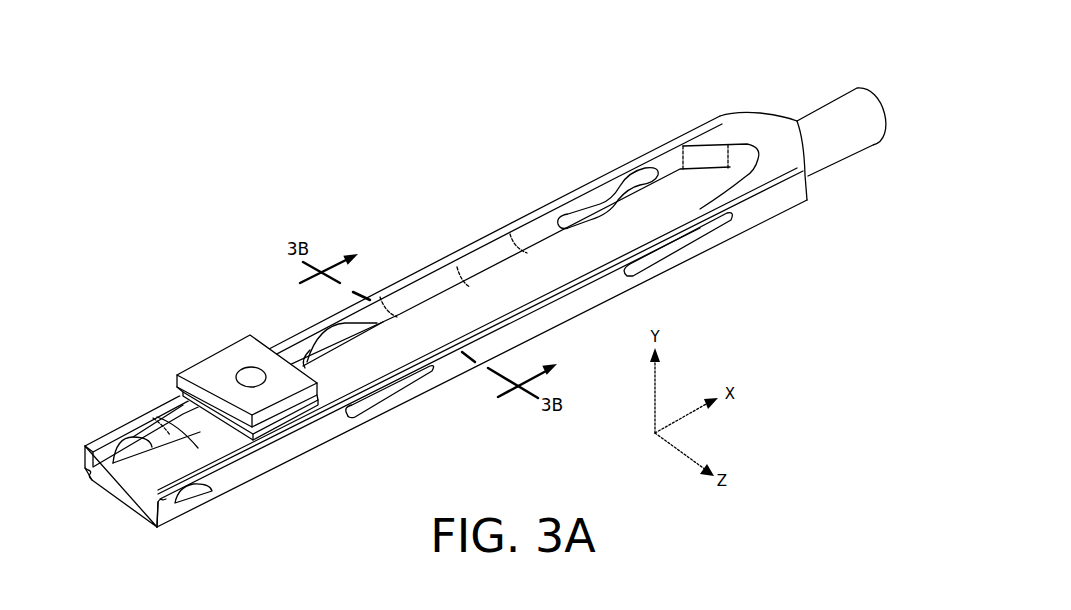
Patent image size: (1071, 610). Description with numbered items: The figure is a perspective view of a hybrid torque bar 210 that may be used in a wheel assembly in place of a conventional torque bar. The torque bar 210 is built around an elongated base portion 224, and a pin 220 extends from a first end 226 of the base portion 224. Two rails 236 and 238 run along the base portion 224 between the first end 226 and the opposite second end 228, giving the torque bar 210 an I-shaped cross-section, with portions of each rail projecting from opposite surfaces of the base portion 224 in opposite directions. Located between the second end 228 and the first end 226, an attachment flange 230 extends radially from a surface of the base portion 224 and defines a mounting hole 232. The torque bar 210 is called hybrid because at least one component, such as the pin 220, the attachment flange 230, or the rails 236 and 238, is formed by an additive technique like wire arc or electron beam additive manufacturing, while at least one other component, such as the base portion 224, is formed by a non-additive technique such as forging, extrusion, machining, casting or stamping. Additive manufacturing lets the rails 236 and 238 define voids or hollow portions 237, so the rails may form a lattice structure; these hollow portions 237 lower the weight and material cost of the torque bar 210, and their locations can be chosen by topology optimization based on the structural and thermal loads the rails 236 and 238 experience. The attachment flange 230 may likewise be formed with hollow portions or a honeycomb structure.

The torque bar 210 is at (488, 140).
The pin 220 is at (838, 96).
The base portion 224 is at (445, 305).
The first end 226 is at (726, 173).
The second end 228 is at (132, 485).
The attachment flange 230 is at (249, 353).
The mounting hole 232 is at (236, 368).
The rail 236 is at (527, 215).
The hollow portions 237 is at (608, 195).
The rail 238 is at (590, 290).